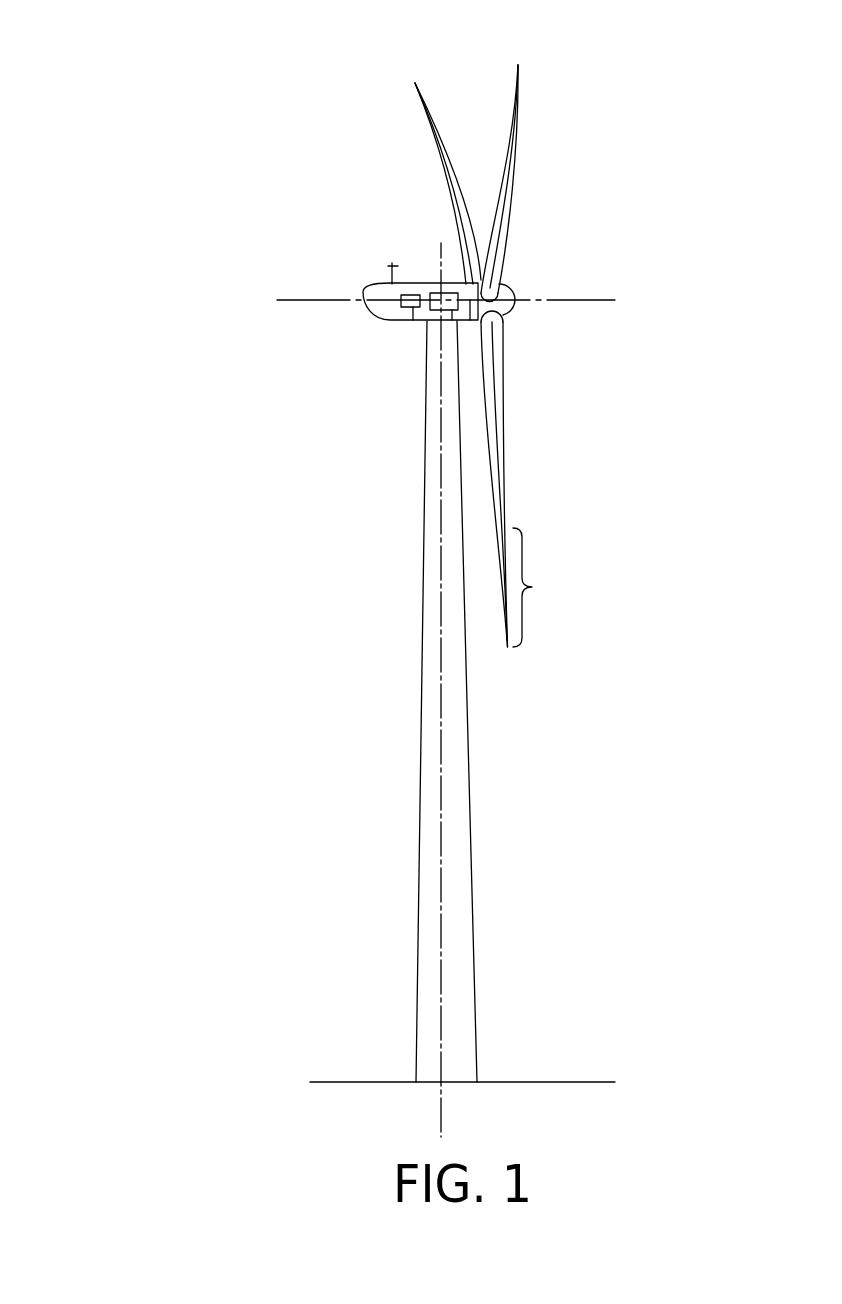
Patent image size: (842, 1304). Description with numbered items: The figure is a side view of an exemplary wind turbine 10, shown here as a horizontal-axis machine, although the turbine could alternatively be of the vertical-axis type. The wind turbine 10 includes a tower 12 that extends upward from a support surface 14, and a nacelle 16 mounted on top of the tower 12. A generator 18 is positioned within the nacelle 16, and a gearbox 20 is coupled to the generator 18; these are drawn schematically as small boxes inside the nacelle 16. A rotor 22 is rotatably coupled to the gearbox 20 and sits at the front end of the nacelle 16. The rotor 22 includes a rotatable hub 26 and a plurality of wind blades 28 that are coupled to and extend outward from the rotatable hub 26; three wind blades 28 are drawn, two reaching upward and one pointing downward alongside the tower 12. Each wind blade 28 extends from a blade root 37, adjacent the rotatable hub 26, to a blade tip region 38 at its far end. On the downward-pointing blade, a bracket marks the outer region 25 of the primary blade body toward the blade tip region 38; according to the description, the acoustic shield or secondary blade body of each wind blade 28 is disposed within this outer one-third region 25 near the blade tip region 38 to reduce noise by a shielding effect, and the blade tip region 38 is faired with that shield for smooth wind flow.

The wind turbine 10 is at (639, 57).
The tower 12 is at (423, 609).
The support surface 14 is at (374, 1082).
The nacelle 16 is at (410, 321).
The generator 18 is at (401, 300).
The gearbox 20 is at (435, 294).
The rotor 22 is at (519, 286).
The rotatable hub 26 is at (516, 300).
The wind blades 28 is at (434, 140).
The blade root 37 is at (509, 320).
The outer region 25 is at (540, 587).
The blade tip region 38 is at (517, 652).